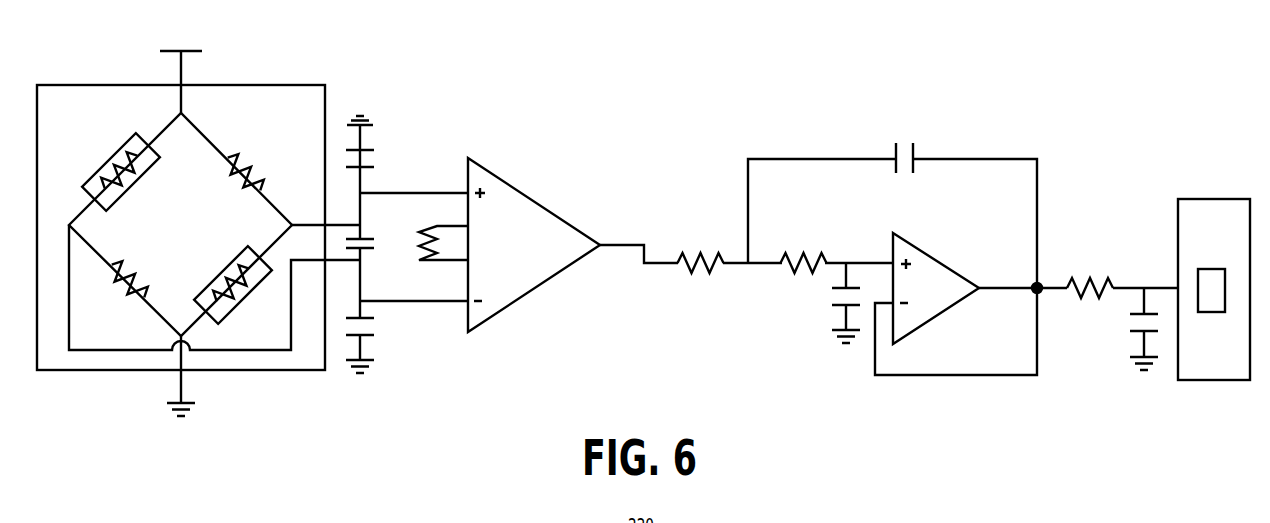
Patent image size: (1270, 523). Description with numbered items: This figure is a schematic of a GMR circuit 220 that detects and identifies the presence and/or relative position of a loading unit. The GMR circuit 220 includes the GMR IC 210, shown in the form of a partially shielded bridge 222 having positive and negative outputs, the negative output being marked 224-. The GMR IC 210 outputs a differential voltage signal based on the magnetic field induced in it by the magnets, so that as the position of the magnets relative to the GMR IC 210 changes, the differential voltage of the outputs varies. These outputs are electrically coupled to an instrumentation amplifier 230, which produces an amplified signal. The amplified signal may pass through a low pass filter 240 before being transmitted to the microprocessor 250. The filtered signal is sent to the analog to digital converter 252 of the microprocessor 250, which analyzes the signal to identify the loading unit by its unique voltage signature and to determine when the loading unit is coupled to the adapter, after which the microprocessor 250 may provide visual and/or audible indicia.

The GMR IC 210 is at (198, 220).
The GMR circuit 220 is at (685, 111).
The partially shielded bridge 222 is at (268, 195).
The negative output 224- is at (337, 263).
The instrumentation amplifier 230 is at (523, 213).
The low pass filter 240 is at (937, 274).
The microprocessor 250 is at (1214, 285).
The analog to digital converter 252 is at (1207, 312).